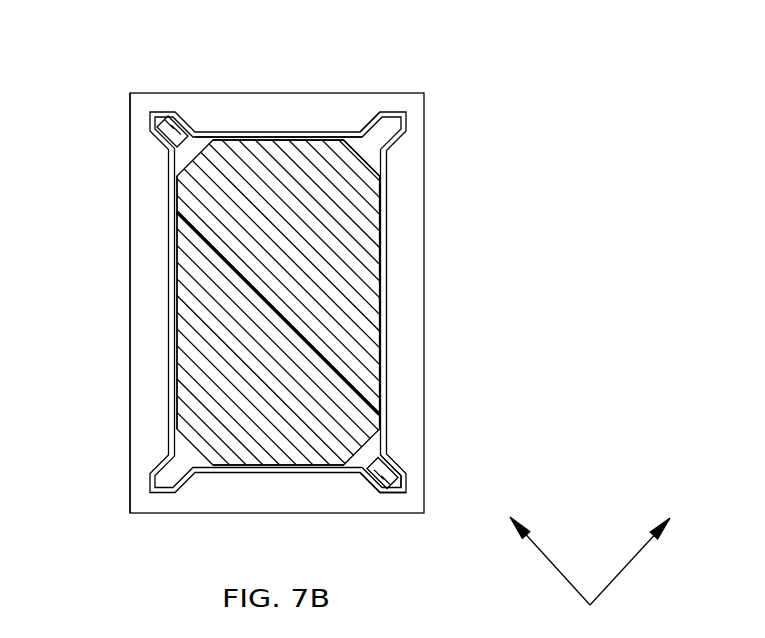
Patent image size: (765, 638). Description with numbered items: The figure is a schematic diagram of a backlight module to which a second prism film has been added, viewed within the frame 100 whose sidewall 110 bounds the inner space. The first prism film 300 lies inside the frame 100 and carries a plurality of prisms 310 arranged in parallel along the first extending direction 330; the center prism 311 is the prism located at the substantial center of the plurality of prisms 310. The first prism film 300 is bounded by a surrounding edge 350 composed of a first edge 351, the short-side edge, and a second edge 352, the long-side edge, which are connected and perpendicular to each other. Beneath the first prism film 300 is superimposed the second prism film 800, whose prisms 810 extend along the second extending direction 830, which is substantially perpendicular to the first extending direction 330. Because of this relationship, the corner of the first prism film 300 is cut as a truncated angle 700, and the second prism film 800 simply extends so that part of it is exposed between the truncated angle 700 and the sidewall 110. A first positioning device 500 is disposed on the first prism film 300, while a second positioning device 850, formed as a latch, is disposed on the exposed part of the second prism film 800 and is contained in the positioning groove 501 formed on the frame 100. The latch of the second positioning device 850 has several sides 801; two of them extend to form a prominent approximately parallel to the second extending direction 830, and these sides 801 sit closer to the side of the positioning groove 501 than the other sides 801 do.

The frame 100 is at (140, 416).
The sidewall 110 is at (170, 370).
The first prism film 300 is at (187, 307).
The prisms 310 is at (290, 162).
The center prism 311 is at (312, 342).
The first extending direction 330 is at (542, 548).
The surrounding edge 350 is at (141, 8).
The first edge 351 is at (231, 137).
The second edge 352 is at (178, 225).
The first positioning device 500 is at (396, 125).
The positioning groove 501 is at (375, 126).
The truncated angle 700 is at (348, 461).
The second prism film 800 is at (372, 447).
The sides 801 is at (368, 490).
The prisms 810 is at (400, 471).
The second extending direction 830 is at (642, 548).
The second positioning device 850 is at (167, 125).